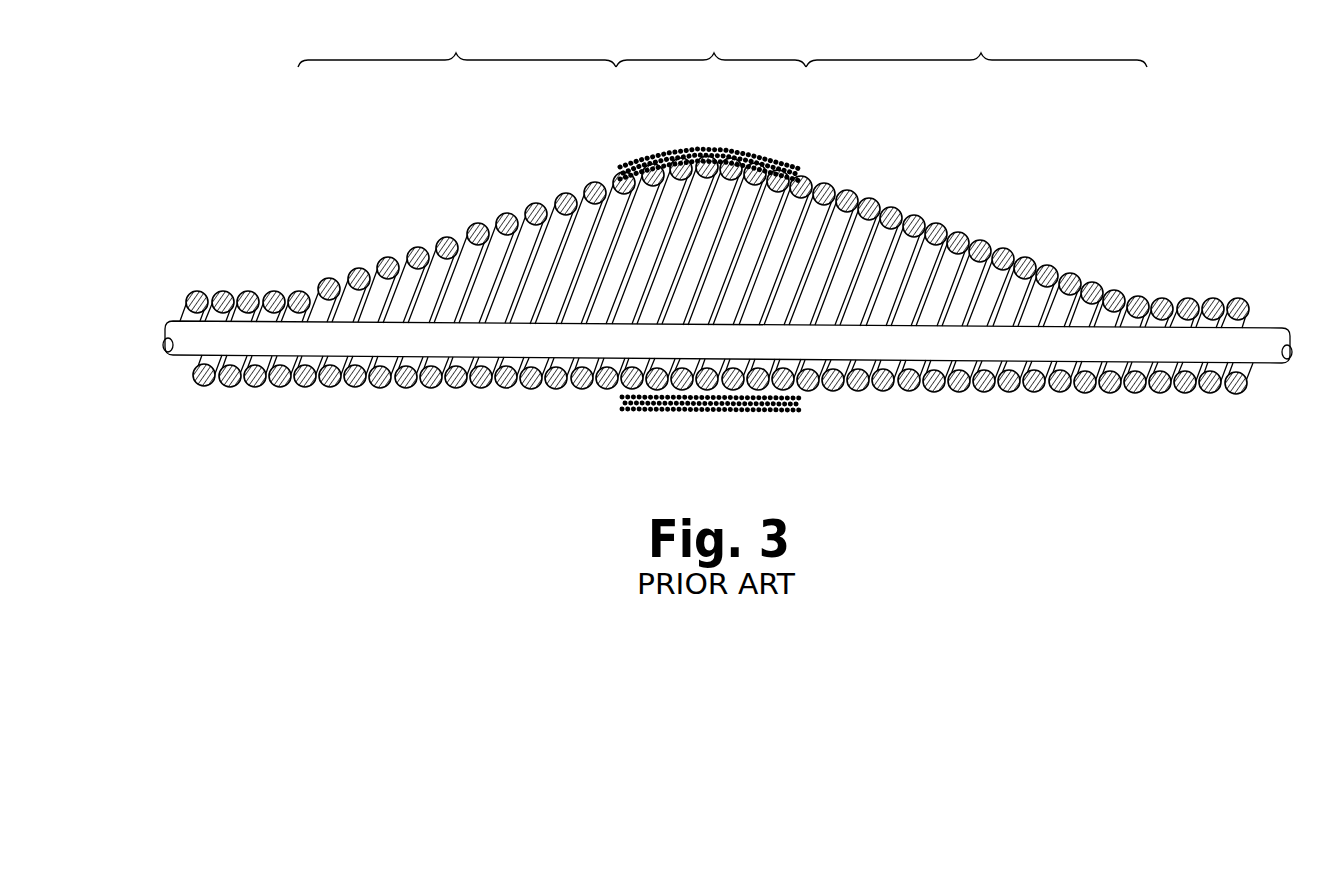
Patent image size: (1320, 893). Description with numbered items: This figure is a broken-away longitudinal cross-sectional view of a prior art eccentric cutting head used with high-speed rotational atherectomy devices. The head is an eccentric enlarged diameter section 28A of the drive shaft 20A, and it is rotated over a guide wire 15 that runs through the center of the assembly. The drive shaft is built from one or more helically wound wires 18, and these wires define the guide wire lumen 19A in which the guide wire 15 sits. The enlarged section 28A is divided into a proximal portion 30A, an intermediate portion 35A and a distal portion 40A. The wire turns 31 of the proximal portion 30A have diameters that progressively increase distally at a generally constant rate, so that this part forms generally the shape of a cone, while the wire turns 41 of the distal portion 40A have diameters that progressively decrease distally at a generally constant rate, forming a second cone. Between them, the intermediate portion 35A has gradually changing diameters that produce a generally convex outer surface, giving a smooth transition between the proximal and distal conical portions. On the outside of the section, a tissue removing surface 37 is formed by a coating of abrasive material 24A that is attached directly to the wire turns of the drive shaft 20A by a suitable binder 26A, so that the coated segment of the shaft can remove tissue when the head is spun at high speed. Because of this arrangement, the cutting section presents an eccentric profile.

The guide wire 15 is at (186, 333).
The helically wound wires 18 is at (249, 288).
The guide wire lumen 19A is at (192, 362).
The drive shaft 20A is at (676, 429).
The abrasive material 24A is at (667, 150).
The binder 26A is at (706, 153).
The eccentric enlarged diameter section 28A is at (714, 206).
The proximal portion 30A is at (976, 45).
The wire turns of the proximal portion 31 is at (993, 243).
The intermediate portion 35A is at (711, 45).
The tissue removing surface 37 is at (782, 160).
The distal portion 40A is at (457, 45).
The wire turns of the distal portion 41 is at (450, 235).